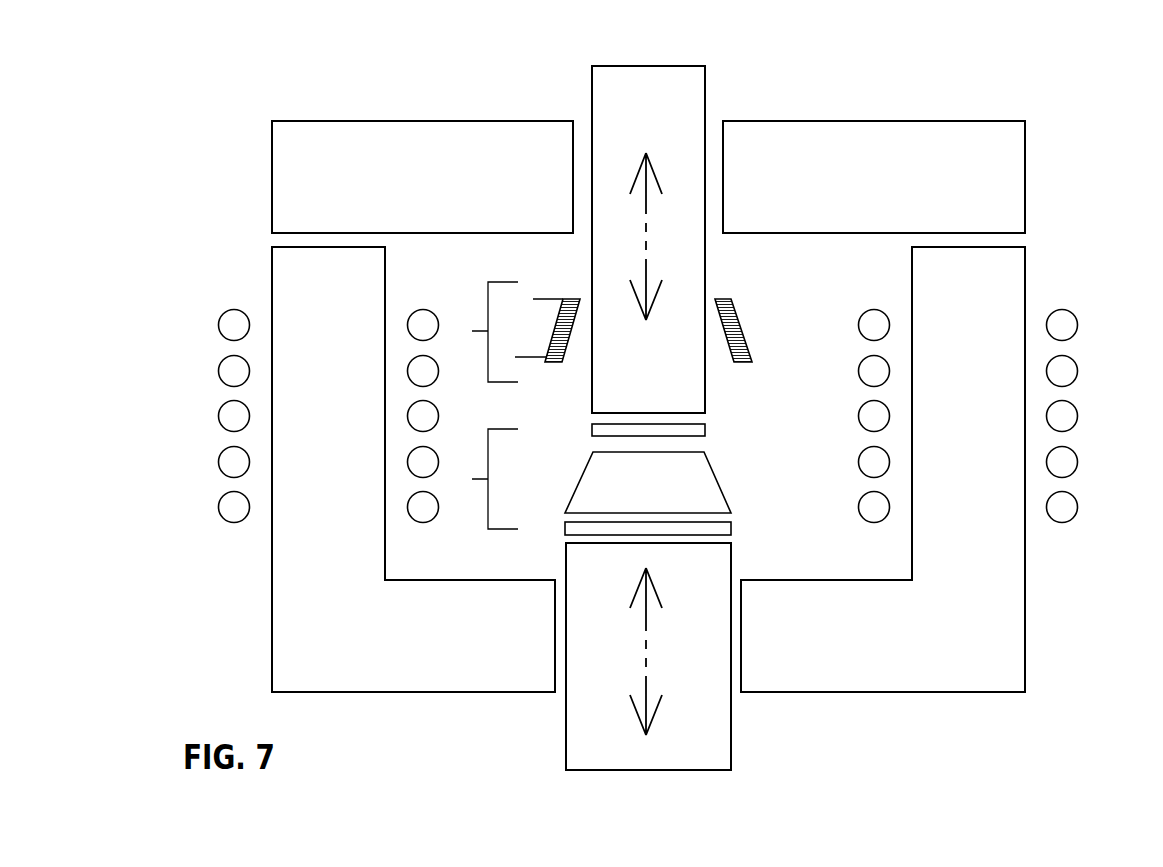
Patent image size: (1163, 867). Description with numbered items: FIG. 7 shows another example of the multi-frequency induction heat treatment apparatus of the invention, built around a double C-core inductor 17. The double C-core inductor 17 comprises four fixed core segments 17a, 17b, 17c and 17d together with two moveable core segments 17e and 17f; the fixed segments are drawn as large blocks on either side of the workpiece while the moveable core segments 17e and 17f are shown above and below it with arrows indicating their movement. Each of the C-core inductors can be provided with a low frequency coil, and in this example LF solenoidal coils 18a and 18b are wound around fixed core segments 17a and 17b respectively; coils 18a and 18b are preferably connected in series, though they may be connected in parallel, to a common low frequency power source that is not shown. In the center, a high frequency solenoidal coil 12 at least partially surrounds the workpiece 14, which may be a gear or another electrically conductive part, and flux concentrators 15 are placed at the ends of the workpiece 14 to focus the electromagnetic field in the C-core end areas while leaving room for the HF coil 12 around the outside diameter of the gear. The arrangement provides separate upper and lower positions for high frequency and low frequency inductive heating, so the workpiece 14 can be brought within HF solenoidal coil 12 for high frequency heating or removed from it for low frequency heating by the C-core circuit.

The double C-core inductor 17 is at (1082, 104).
The fixed core segment 17a is at (882, 660).
The fixed core segment 17b is at (398, 665).
The fixed core segment 17c is at (413, 137).
The fixed core segment 17d is at (880, 147).
The moveable core segment 17e is at (619, 107).
The moveable core segment 17f is at (600, 743).
The LF solenoidal coil 18a is at (1062, 302).
The LF solenoidal coil 18b is at (234, 302).
The HF solenoidal coil 12 is at (562, 327).
The workpiece 14 is at (657, 493).
The flux concentrator 15 is at (697, 430).